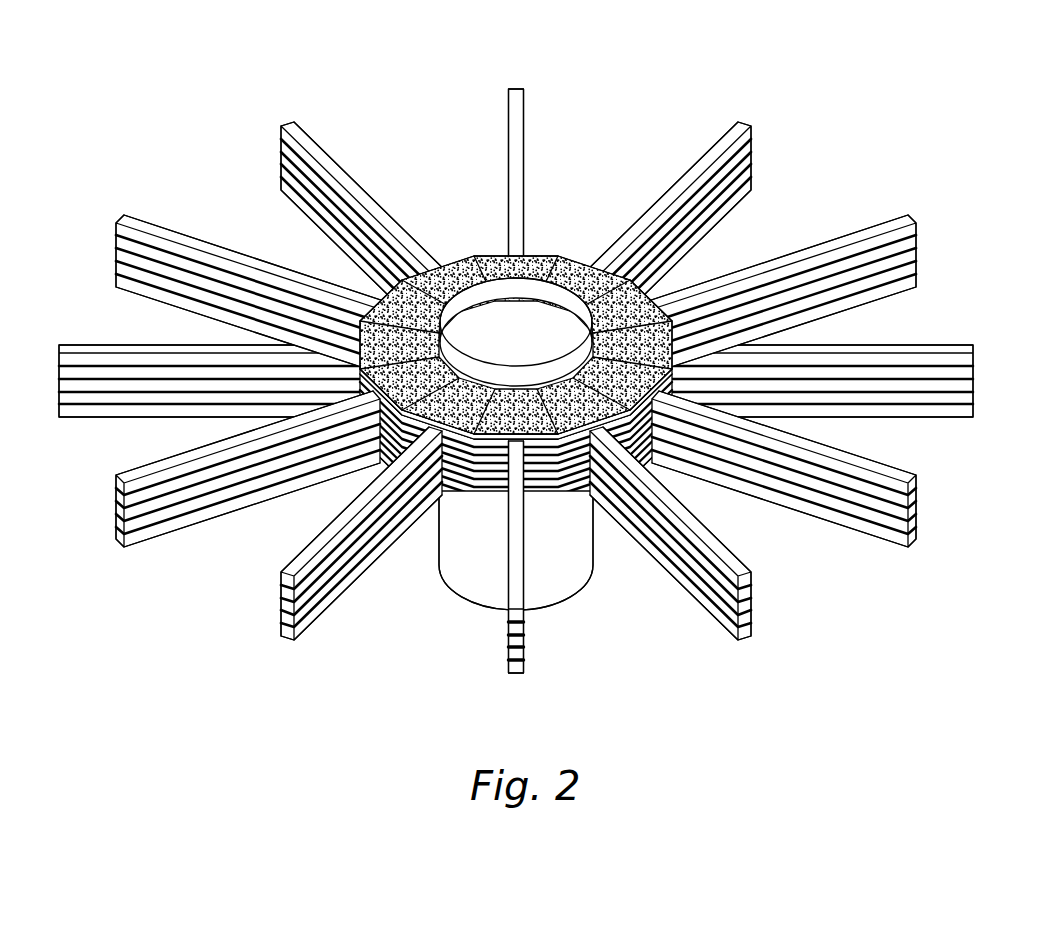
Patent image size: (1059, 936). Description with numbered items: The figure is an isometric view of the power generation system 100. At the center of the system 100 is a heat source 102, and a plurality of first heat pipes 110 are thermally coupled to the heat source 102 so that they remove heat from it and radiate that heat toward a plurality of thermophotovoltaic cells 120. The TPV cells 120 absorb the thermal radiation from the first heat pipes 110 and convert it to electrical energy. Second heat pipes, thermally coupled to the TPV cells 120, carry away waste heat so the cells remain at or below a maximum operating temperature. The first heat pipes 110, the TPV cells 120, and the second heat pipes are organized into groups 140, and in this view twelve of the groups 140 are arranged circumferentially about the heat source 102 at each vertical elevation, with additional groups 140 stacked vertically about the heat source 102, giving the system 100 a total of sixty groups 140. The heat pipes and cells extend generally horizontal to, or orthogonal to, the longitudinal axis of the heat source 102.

The power generation system 100 is at (516, 359).
The heat source 102 is at (488, 318).
The first heat pipes 110 is at (623, 306).
The thermophotovoltaic (TPV) cells 120 is at (473, 500).
The groups 140 is at (522, 438).